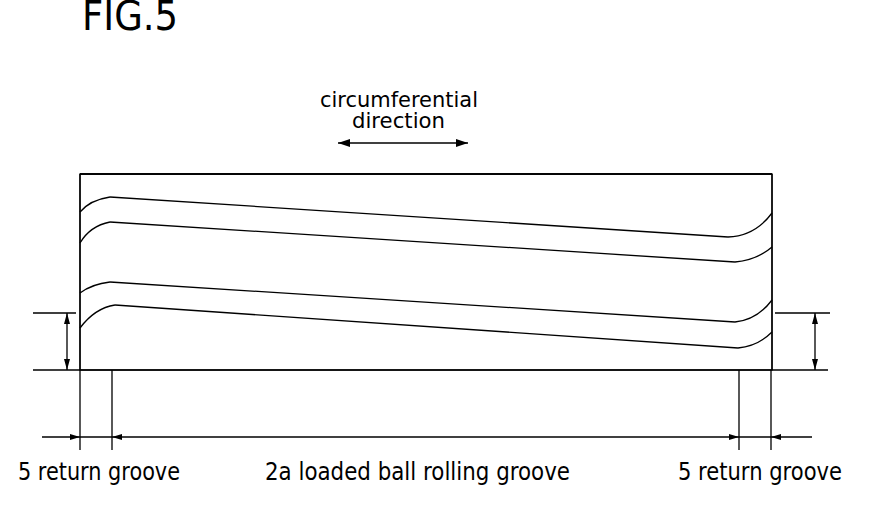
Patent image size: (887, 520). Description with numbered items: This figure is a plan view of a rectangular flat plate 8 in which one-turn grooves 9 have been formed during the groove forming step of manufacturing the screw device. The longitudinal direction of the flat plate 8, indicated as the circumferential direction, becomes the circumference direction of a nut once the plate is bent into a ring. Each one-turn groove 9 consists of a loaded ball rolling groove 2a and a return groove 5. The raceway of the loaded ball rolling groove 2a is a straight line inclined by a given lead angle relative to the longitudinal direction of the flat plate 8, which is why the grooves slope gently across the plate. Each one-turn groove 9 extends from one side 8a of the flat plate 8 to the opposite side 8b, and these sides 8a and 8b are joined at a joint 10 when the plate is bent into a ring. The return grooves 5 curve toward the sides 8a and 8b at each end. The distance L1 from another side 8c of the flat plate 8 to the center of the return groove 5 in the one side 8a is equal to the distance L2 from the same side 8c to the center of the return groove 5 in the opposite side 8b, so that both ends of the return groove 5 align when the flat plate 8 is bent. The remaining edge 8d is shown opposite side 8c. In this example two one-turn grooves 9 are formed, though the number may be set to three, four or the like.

The loaded ball rolling groove 2a is at (497, 230).
The return groove 5 is at (89, 223).
The flat plate 8 is at (669, 190).
The one side 8a is at (80, 262).
The opposite side 8b is at (776, 258).
The another side 8c is at (497, 373).
The top face of block 8d is at (606, 173).
The one-turn groove 9 is at (210, 297).
The joint 10 is at (80, 186).
The distance L1 is at (54, 341).
The distance L2 is at (801, 341).